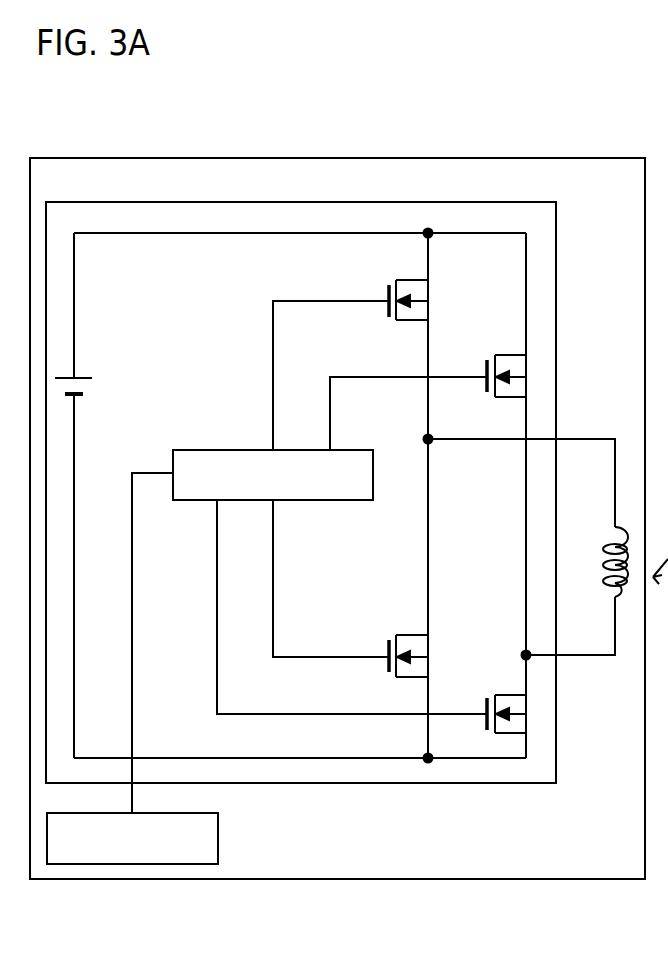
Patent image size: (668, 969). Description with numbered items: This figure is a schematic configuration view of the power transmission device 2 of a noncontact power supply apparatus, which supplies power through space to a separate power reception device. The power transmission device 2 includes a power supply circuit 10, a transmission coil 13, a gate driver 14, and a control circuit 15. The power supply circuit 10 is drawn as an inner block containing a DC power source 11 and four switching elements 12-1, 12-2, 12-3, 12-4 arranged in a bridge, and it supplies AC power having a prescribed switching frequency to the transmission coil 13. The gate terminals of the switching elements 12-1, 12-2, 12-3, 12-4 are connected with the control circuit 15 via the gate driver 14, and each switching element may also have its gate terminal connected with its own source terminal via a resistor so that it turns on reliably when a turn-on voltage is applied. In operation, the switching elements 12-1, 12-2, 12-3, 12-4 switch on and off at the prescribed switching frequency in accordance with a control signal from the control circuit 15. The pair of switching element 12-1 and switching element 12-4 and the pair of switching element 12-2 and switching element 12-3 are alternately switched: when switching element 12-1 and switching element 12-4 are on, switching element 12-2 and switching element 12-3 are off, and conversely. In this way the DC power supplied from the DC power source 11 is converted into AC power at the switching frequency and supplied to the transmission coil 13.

The power transmission device 2 is at (513, 879).
The power supply circuit 10 is at (483, 783).
The DC power source 11 is at (93, 386).
The switching element 12-1 is at (390, 277).
The switching element 12-2 is at (410, 631).
The switching element 12-3 is at (532, 366).
The switching element 12-4 is at (532, 705).
The transmission coil 13 is at (604, 538).
The gate driver 14 is at (212, 450).
The control circuit 15 is at (157, 864).